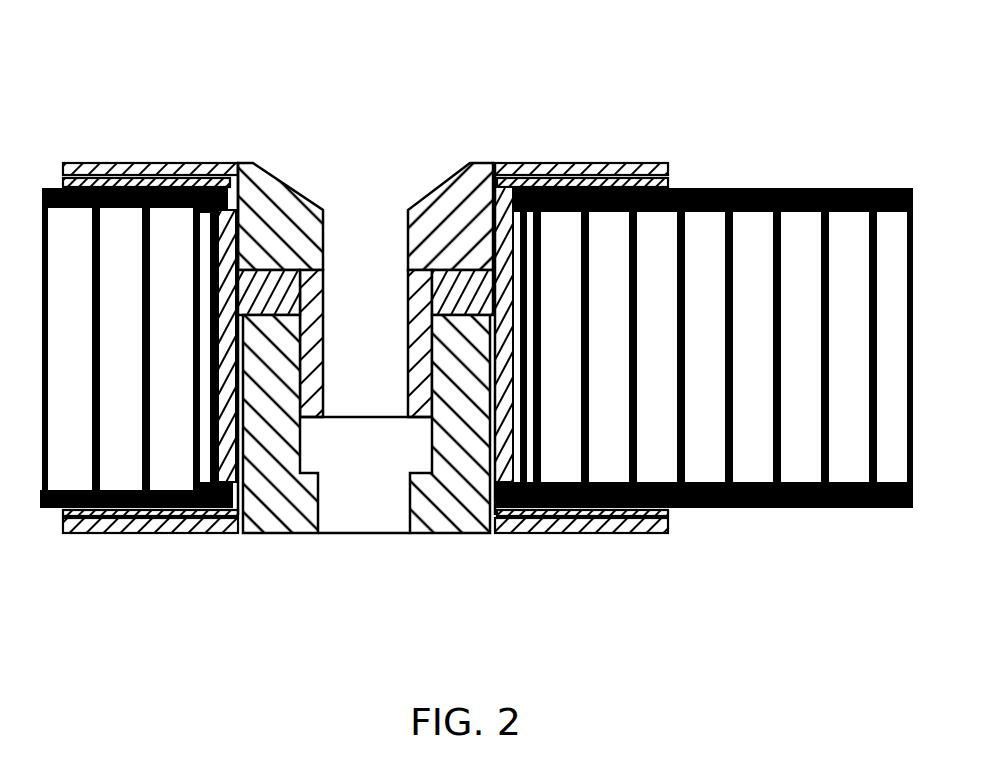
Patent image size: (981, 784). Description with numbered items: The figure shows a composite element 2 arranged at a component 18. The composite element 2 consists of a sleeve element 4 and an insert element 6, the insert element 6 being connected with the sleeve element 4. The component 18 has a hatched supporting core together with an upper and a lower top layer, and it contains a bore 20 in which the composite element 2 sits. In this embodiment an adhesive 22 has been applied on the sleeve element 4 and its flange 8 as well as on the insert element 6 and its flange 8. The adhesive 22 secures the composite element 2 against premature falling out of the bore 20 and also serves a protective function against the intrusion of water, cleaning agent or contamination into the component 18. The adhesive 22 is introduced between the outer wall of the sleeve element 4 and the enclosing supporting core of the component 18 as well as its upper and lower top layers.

The composite element 2 is at (474, 327).
The sleeve element 4 is at (456, 500).
The insert element 6 is at (256, 170).
The flange 8 is at (600, 160).
The component 18 is at (750, 292).
The bore 20 is at (228, 438).
The adhesive 22 is at (471, 283).